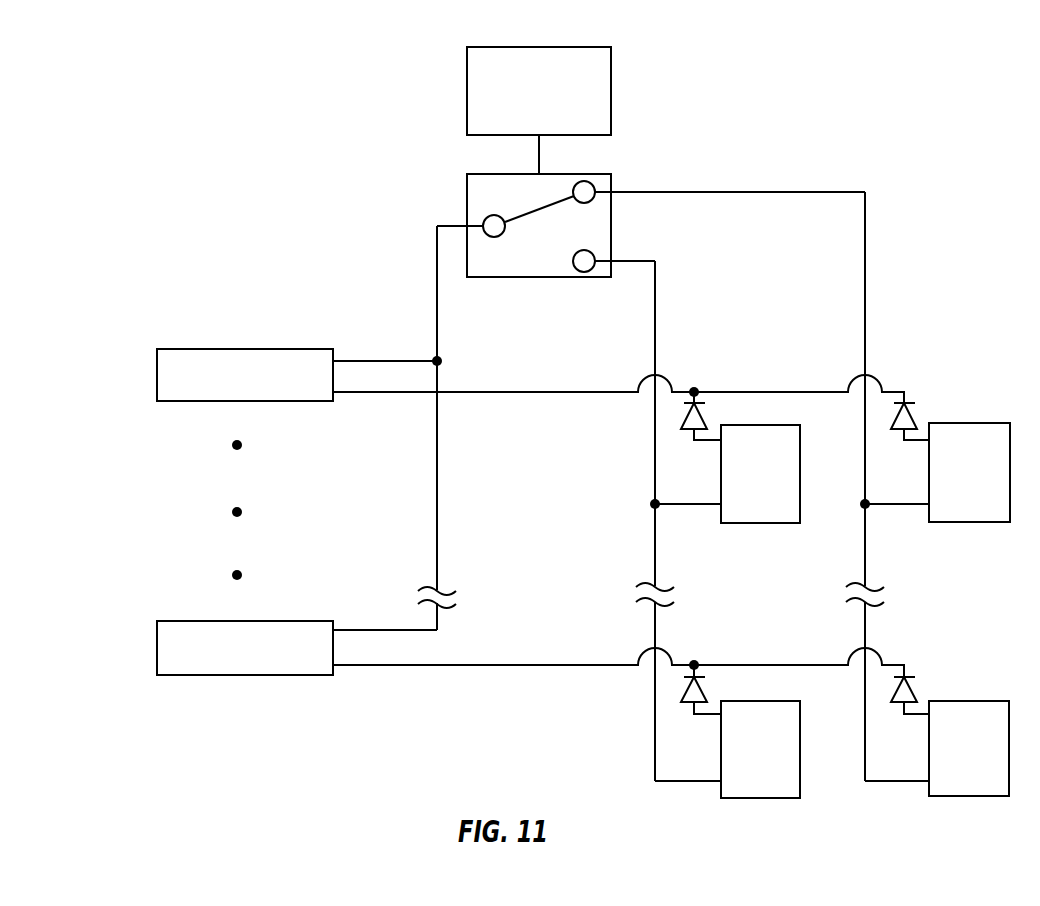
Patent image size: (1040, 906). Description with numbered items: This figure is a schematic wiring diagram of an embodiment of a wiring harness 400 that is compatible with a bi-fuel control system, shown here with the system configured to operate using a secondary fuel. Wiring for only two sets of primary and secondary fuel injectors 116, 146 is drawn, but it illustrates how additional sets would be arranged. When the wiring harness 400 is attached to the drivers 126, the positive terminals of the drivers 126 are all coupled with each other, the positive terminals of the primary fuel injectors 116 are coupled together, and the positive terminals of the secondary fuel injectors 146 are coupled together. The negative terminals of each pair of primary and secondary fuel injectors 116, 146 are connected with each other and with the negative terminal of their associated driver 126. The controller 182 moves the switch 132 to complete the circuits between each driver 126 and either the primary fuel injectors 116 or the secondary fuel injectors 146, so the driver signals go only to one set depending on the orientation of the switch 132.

The wiring harness 400 is at (953, 88).
The controller 182 is at (523, 118).
The switch 132 is at (519, 267).
The driver 126 is at (200, 396).
The primary fuel injector 116 is at (747, 502).
The secondary fuel injector 146 is at (985, 502).